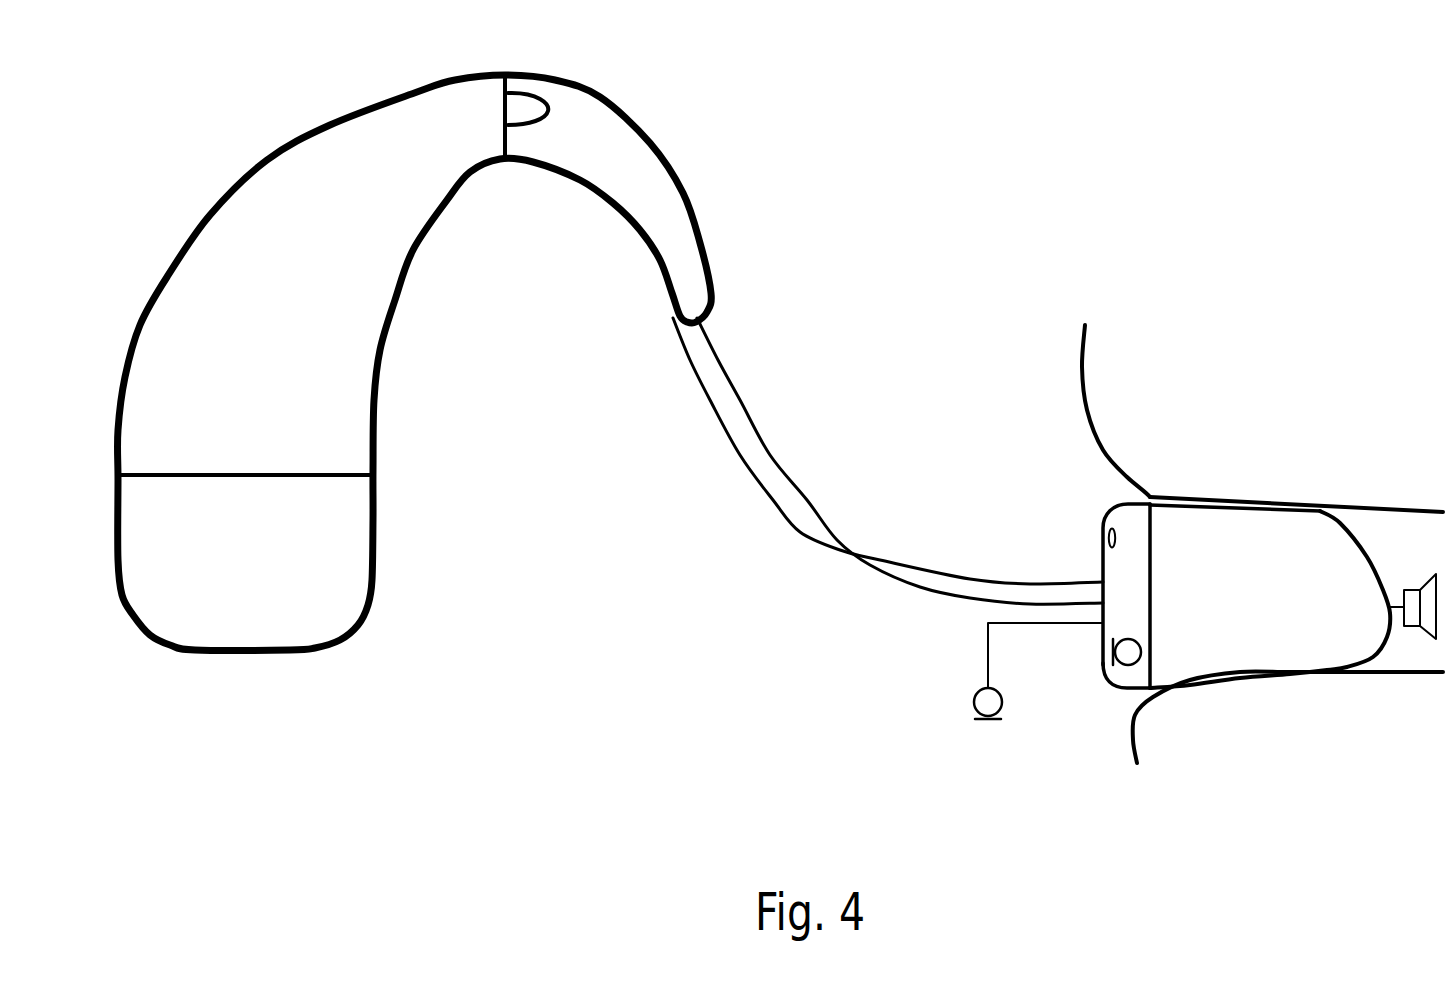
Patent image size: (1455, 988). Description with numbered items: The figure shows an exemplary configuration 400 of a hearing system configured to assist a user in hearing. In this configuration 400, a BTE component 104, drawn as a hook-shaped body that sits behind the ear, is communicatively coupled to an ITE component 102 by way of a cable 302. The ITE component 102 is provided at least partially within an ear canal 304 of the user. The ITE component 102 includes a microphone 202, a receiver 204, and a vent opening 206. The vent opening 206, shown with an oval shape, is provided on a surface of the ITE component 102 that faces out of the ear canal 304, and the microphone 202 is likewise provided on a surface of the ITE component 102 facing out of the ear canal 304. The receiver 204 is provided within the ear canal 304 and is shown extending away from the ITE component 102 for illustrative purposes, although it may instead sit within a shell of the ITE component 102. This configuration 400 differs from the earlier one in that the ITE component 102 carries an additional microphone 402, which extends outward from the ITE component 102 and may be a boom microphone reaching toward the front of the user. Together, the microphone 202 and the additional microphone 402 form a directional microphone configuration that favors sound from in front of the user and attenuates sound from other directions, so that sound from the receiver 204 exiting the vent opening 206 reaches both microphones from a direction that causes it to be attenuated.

The configuration 400 is at (198, 78).
The BTE component 104 is at (342, 583).
The cable 302 is at (788, 518).
The ear canal 304 is at (1350, 512).
The ITE component 102 is at (1128, 500).
The vent opening 206 is at (1103, 530).
The microphone 202 is at (1125, 667).
The receiver 204 is at (1408, 627).
The additional microphone 402 is at (975, 714).